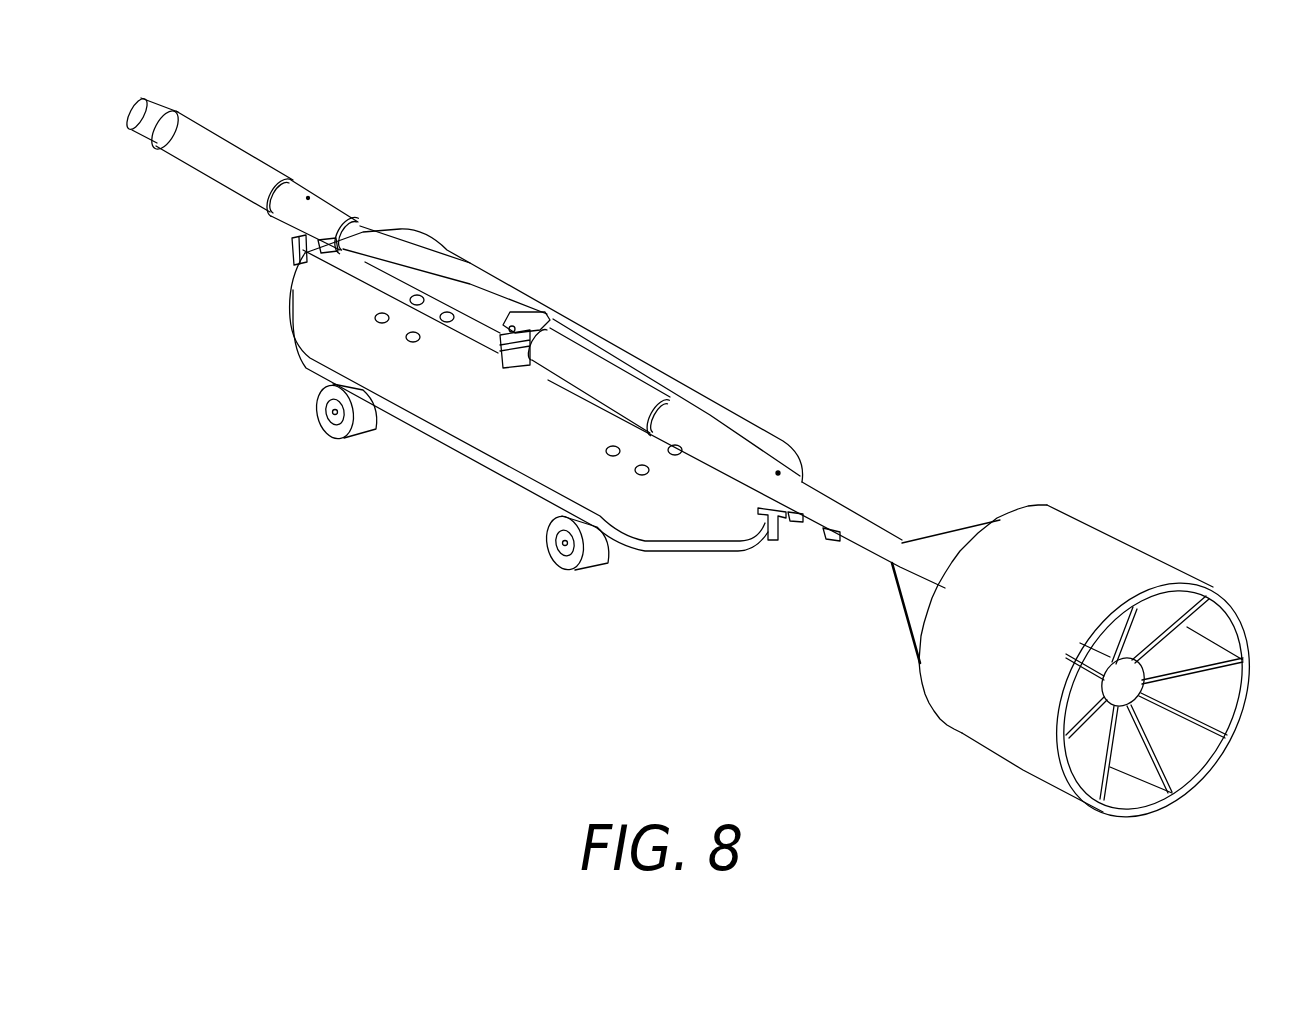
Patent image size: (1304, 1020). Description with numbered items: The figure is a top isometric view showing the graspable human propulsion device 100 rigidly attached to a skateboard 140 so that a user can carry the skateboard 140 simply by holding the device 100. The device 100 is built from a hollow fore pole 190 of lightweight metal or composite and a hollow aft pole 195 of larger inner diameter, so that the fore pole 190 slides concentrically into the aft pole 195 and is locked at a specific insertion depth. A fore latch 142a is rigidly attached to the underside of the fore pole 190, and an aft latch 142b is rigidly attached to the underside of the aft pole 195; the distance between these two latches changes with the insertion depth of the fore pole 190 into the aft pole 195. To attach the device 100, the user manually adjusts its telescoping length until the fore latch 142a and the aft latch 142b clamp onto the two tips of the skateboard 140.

The graspable human propulsion device 100 is at (703, 268).
The skateboard 140 is at (455, 450).
The fore latch 142a is at (293, 252).
The aft latch 142b is at (772, 545).
The hollow fore pole 190 is at (455, 278).
The hollow aft pole 195 is at (817, 488).